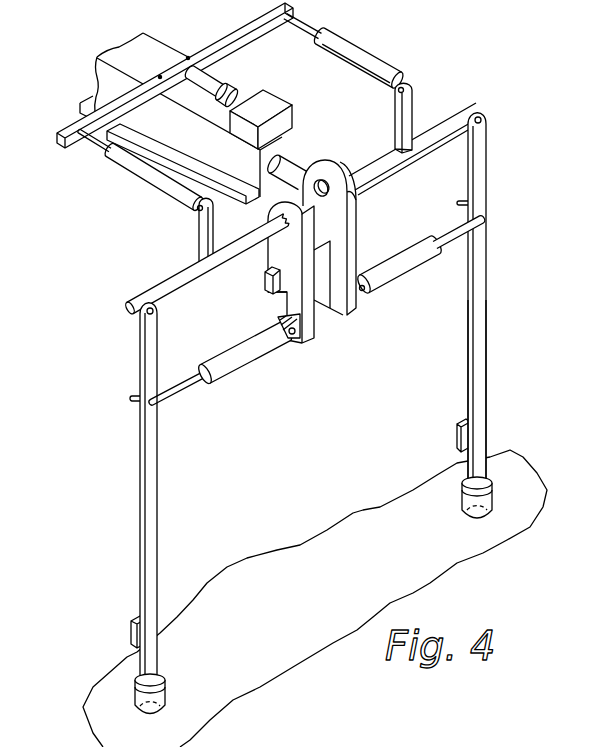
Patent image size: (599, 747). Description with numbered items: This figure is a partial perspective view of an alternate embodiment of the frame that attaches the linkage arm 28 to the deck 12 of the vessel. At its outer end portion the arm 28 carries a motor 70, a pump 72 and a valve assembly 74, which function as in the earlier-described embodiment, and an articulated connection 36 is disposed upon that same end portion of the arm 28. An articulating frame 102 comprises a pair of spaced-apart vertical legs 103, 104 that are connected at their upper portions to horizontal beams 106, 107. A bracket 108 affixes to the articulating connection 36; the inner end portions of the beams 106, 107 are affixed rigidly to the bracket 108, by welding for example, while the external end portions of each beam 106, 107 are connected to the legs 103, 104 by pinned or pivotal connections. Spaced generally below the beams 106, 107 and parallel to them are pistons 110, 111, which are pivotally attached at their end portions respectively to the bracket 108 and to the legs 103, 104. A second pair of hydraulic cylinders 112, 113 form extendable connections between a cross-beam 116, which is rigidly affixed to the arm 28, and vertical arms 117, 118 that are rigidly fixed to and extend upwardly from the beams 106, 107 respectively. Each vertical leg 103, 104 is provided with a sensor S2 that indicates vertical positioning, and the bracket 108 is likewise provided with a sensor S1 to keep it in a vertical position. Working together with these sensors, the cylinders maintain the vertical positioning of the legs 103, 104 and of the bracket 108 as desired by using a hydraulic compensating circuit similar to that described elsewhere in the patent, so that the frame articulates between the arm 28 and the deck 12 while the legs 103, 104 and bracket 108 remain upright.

The deck 12 is at (347, 527).
The arm 28 is at (181, 115).
The articulated connection 36 is at (322, 206).
The motor 70 is at (225, 72).
The pump 72 is at (248, 84).
The valve assembly 74 is at (284, 119).
The articulating frame 102 is at (481, 160).
The vertical leg 103 is at (153, 490).
The vertical leg 104 is at (480, 338).
The horizontal beam 106 is at (158, 285).
The horizontal beam 107 is at (445, 118).
The bracket 108 is at (343, 303).
The piston 110 is at (248, 365).
The piston 111 is at (404, 263).
The hydraulic cylinder 112 is at (130, 182).
The hydraulic cylinder 113 is at (359, 41).
The cross-beam 116 is at (240, 25).
The vertical arm 117 is at (200, 233).
The vertical arm 118 is at (393, 118).
The sensor S1 is at (265, 284).
The sensor S2 is at (457, 434).